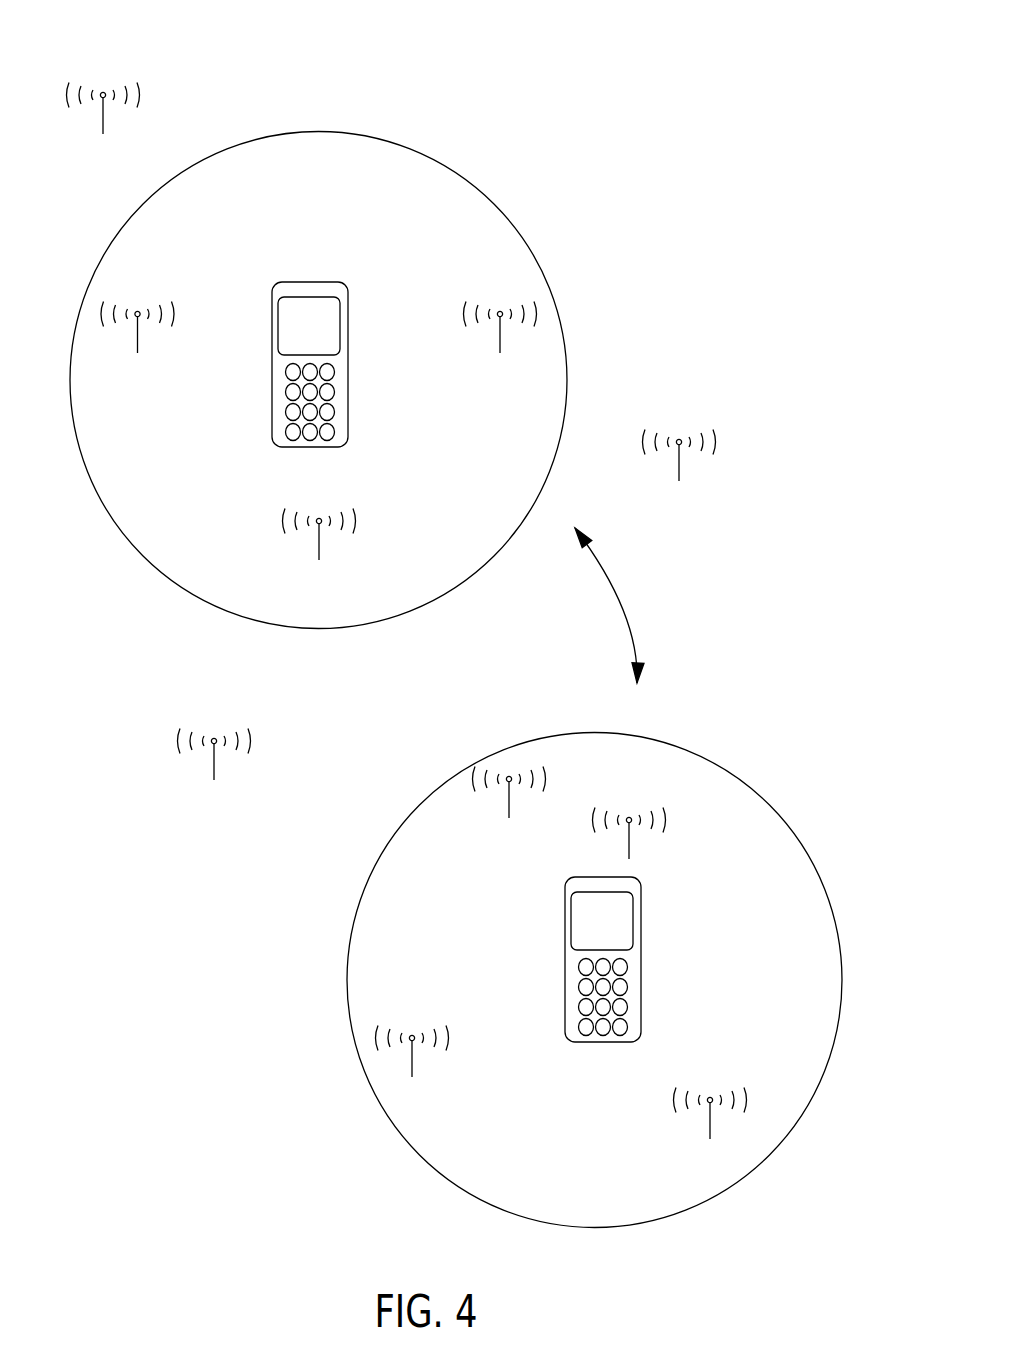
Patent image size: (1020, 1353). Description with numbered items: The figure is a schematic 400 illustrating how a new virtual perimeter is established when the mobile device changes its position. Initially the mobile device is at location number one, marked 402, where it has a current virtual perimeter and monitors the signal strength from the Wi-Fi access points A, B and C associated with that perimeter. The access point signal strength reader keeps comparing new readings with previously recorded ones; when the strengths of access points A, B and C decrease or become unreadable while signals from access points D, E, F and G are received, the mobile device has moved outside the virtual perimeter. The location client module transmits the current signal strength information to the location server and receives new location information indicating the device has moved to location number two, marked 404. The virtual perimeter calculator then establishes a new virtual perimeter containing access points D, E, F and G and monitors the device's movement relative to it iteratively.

The schematic 400 is at (753, 29).
The location #1 402 is at (412, 238).
The location #2 404 is at (582, 1168).